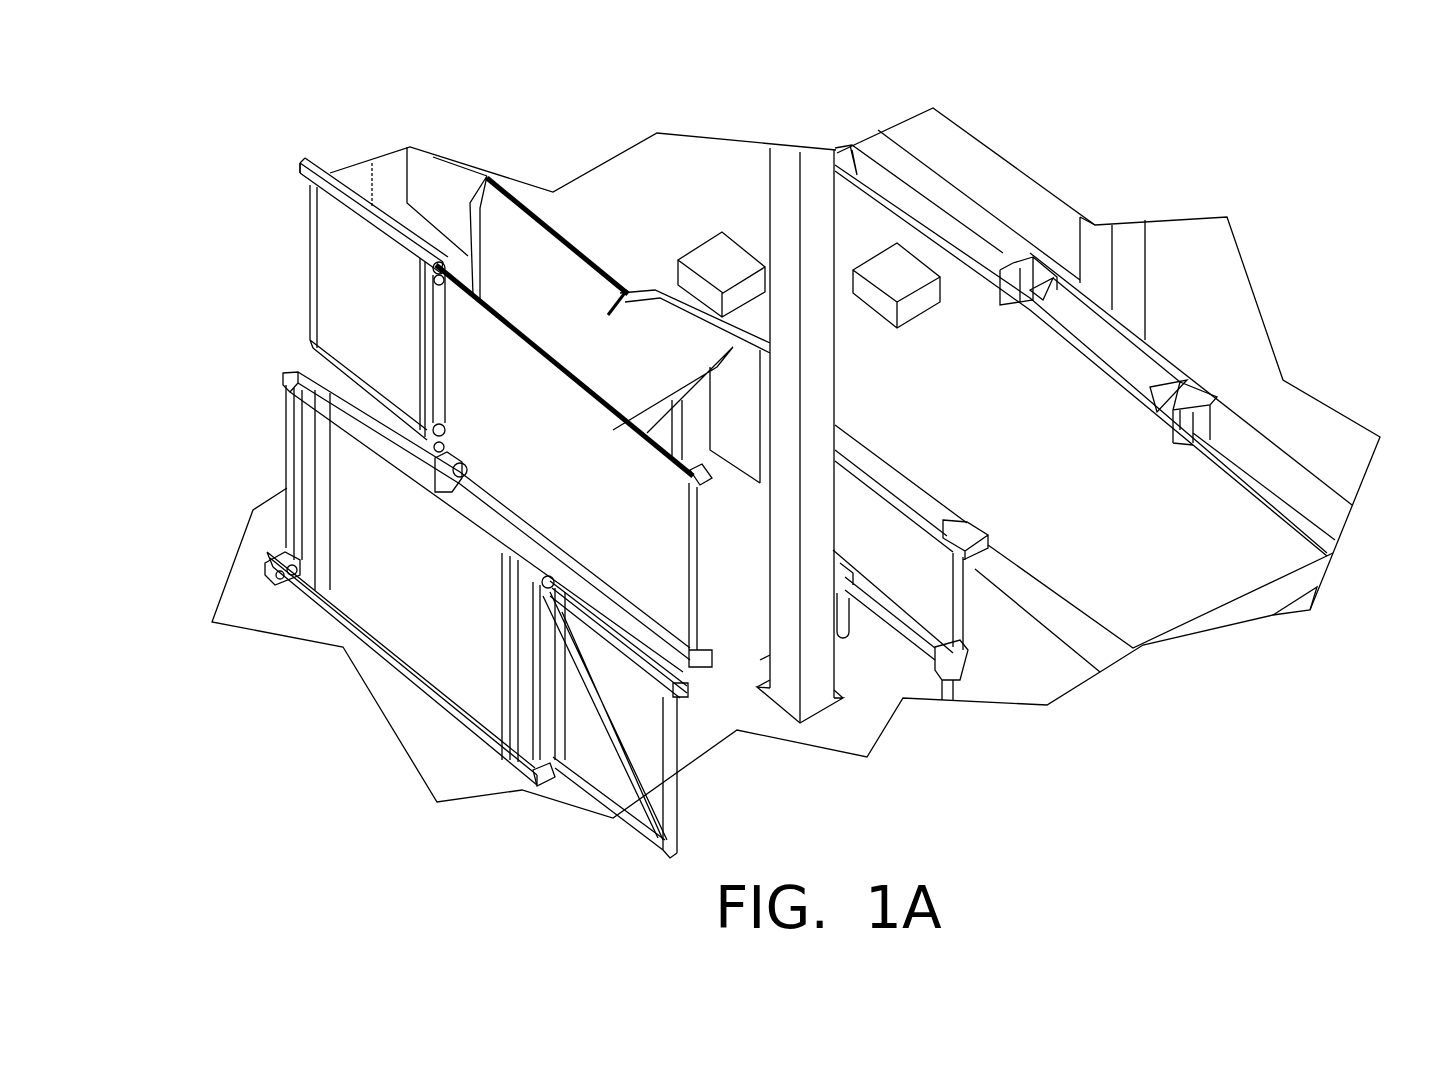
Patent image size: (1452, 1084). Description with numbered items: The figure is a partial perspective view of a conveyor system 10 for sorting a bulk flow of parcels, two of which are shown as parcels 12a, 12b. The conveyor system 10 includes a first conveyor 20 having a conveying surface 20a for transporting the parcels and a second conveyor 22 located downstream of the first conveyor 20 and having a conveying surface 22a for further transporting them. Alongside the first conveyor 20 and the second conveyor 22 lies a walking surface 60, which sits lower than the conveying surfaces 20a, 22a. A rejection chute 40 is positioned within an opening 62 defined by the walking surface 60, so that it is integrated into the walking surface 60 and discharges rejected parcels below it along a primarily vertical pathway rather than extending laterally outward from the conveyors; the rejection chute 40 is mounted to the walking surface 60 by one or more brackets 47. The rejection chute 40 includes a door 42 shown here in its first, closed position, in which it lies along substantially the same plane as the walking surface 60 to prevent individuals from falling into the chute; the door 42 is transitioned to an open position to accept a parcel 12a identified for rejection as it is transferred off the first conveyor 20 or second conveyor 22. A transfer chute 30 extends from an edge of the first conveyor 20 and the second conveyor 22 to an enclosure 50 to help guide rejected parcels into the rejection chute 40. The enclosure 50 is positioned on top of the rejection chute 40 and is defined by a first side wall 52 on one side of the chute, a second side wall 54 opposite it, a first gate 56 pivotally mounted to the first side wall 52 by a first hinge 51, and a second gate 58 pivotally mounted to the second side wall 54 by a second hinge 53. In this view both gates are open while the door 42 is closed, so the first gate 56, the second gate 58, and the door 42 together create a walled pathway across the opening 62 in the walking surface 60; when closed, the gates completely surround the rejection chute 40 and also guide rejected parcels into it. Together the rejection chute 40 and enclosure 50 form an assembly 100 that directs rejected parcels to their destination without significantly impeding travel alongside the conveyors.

The assembly 100 is at (298, 160).
The conveyor system 10 is at (482, 128).
The parcel 12a is at (700, 238).
The parcel 12b is at (907, 272).
The first conveyor 20 is at (1247, 470).
The conveying surface 20a is at (1030, 437).
The second conveyor 22 is at (683, 157).
The conveying surface 22a is at (645, 227).
The transfer chute 30 is at (497, 222).
The rejection chute 40 is at (427, 456).
The door 42 is at (690, 660).
The bracket 47 is at (403, 655).
The enclosure 50 is at (287, 478).
The first hinge 51 is at (393, 248).
The first side wall 52 is at (767, 665).
The second hinge 53 is at (555, 590).
The second side wall 54 is at (490, 693).
The first gate 56 is at (330, 300).
The second gate 58 is at (647, 800).
The walking surface 60 is at (745, 569).
The opening 62 is at (760, 697).